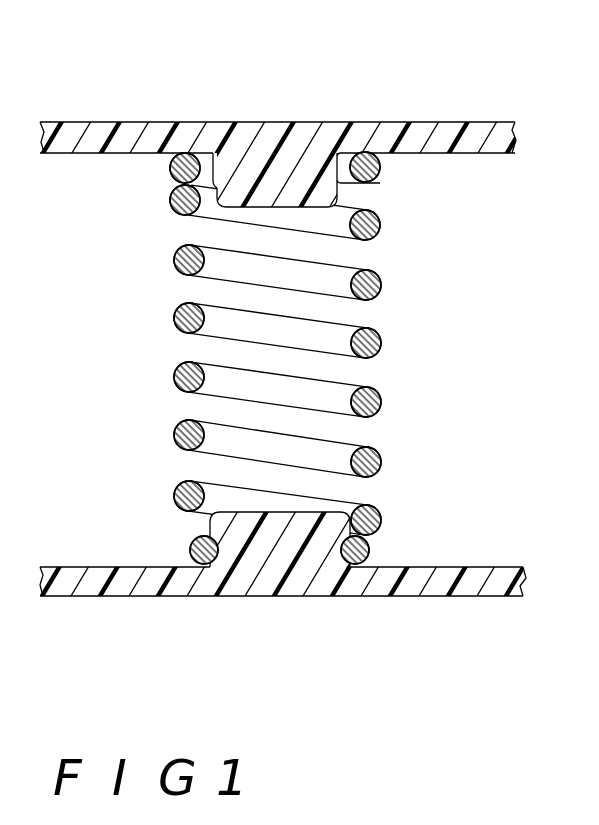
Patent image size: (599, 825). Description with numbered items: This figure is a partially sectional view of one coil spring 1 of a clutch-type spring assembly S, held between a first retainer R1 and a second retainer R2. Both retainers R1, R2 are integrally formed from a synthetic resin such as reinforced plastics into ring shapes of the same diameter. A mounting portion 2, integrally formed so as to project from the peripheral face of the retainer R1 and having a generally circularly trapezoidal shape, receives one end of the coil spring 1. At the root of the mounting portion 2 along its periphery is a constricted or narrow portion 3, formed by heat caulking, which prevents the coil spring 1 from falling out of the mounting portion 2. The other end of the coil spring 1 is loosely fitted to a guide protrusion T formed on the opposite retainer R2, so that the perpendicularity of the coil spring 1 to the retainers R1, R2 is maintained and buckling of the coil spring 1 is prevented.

The spring assembly S is at (455, 82).
The coil spring 1 is at (381, 405).
The mounting portion 2 is at (270, 548).
The constricted portion 3 is at (347, 565).
The guide protrusion T is at (215, 165).
The first retainer R1 is at (279, 584).
The second retainer R2 is at (282, 131).